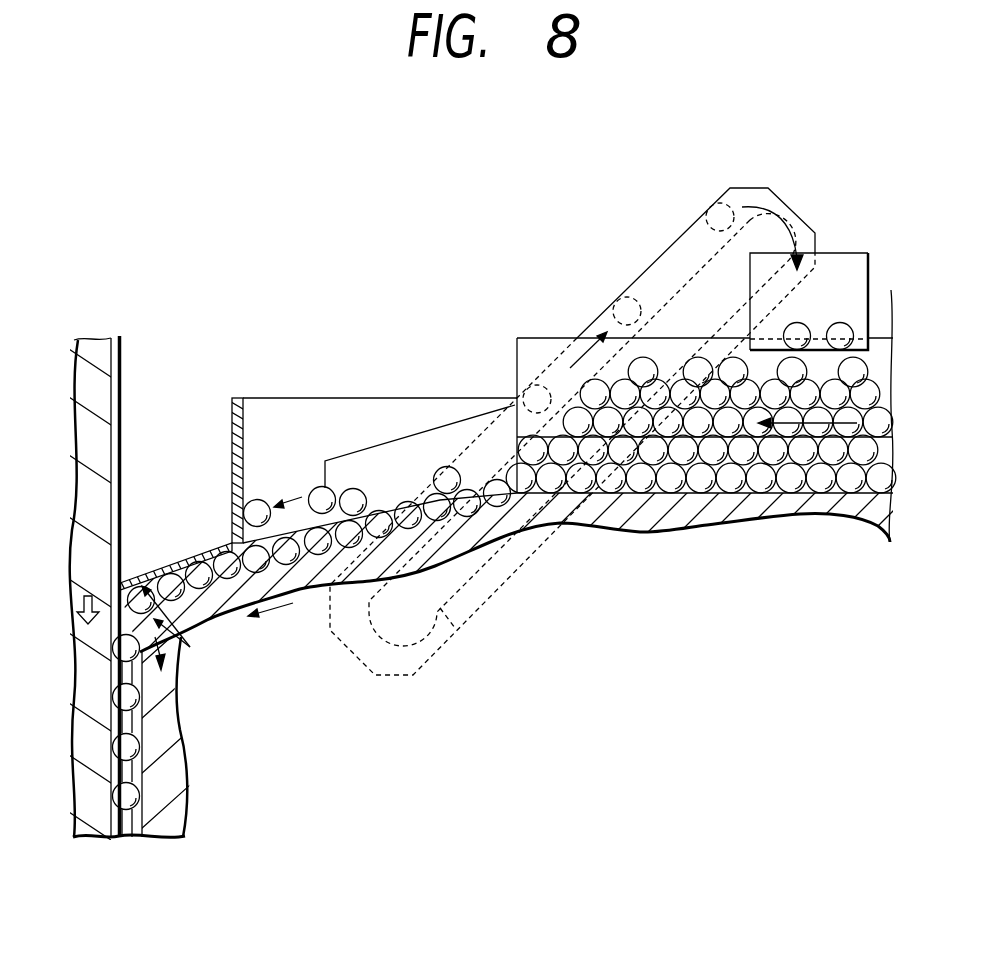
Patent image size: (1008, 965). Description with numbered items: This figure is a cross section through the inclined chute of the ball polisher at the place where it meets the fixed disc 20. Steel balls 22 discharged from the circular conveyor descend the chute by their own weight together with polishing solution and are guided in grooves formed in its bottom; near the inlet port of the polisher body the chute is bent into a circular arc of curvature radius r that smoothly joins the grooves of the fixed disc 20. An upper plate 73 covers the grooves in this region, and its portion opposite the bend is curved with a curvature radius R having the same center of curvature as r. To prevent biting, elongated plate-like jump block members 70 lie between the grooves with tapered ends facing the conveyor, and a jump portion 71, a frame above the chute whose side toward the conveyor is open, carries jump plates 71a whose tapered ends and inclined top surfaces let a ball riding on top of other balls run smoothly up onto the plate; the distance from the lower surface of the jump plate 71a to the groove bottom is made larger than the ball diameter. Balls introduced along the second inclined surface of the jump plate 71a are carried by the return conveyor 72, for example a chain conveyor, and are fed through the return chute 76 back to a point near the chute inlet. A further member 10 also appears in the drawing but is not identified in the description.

The substrate wall 10 is at (100, 392).
The fixed disc 20 is at (173, 780).
The steel balls 22 is at (793, 487).
The jump block member 70 is at (312, 603).
The jump portion 71 is at (255, 390).
The jump plate 71a is at (283, 496).
The return conveyor 72 is at (725, 188).
The upper plate 73 is at (183, 560).
The return chute 76 is at (845, 262).
The curvature radius of the upper plate R is at (189, 623).
The curvature radius of the inclined chute r is at (186, 640).